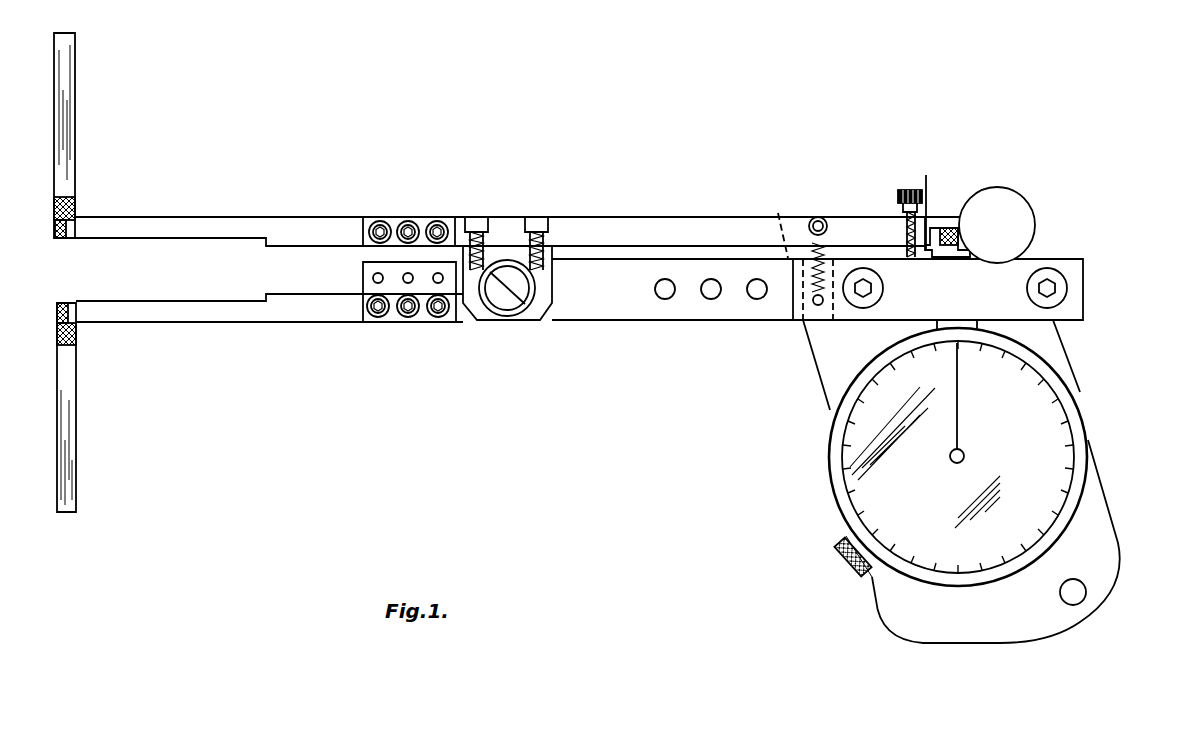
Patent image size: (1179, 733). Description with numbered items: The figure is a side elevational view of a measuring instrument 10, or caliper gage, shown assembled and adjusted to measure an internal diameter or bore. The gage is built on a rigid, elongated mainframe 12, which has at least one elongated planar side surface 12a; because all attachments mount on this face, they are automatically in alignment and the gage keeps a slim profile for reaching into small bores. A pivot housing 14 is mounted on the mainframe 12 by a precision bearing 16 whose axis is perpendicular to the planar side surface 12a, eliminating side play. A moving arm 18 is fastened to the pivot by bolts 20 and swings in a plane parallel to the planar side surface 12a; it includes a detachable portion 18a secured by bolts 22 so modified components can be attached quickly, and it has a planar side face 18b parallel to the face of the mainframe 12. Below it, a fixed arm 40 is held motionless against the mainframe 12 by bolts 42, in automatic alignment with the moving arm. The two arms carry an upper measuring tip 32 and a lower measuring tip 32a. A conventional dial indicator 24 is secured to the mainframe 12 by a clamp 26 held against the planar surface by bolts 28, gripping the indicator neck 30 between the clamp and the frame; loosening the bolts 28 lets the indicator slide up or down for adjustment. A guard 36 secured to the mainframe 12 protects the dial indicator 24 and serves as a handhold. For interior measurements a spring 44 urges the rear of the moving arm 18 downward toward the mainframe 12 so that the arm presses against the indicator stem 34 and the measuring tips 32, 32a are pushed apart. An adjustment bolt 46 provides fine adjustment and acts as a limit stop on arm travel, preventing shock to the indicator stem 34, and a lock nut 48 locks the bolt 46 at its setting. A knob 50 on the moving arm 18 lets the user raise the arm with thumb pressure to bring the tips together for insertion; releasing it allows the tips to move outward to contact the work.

The measuring instrument 10 is at (636, 187).
The mainframe 12 is at (616, 330).
The elongated planar side surface 12a is at (687, 305).
The pivot housing 14 is at (549, 312).
The precision bearing 16 is at (501, 306).
The moving arm 18 is at (570, 216).
The detachable portion 18a is at (210, 217).
The planar side face 18b is at (698, 225).
The bolts 20 is at (470, 217).
The bolts 22 is at (378, 216).
The dial indicator 24 is at (823, 463).
The clamp 26 is at (1068, 259).
The bolts 28 is at (848, 303).
The indicator neck 30 is at (1020, 333).
The upper measuring tip 32 is at (75, 130).
The lower measuring tip 32a is at (77, 428).
The indicator stem 34 is at (938, 228).
The guard 36 is at (1110, 528).
The fixed arm 40 is at (248, 324).
The bolts 42 is at (375, 323).
The spring 44 is at (816, 250).
The adjustment bolt 46 is at (905, 245).
The lock nut 48 is at (897, 207).
The knob 50 is at (1024, 194).